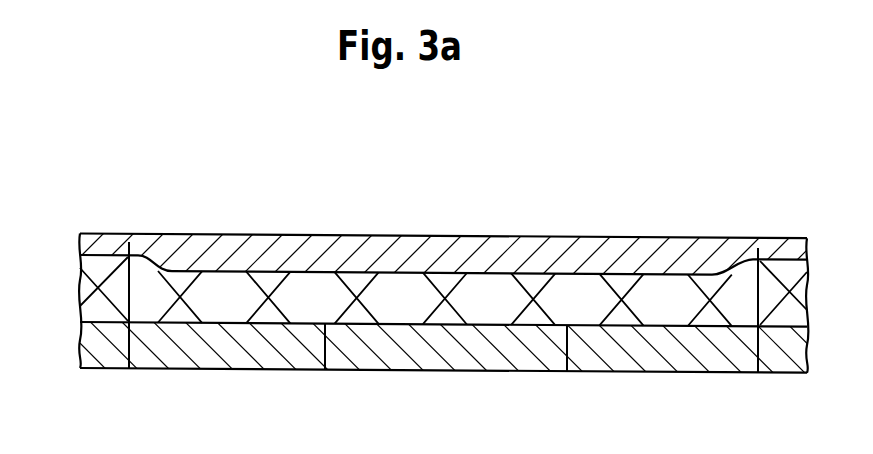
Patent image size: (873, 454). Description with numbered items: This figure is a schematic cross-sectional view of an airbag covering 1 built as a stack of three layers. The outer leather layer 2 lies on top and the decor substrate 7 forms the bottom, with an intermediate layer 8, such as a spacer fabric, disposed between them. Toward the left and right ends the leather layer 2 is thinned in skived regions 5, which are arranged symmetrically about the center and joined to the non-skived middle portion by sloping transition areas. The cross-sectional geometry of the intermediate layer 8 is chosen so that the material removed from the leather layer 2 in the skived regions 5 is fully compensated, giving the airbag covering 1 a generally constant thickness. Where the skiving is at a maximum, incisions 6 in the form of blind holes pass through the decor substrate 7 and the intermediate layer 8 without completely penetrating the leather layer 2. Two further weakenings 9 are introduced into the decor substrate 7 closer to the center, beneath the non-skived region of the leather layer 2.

The airbag covering 1 is at (461, 190).
The leather layer 2 is at (572, 255).
The skived region 5 is at (108, 268).
The incisions 6 is at (130, 349).
The decor substrate 7 is at (92, 343).
The intermediate layer 8 is at (92, 297).
The weakenings 9 is at (326, 349).